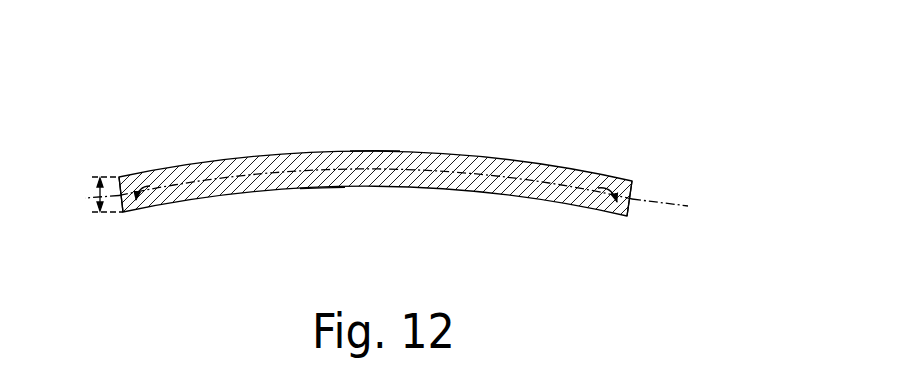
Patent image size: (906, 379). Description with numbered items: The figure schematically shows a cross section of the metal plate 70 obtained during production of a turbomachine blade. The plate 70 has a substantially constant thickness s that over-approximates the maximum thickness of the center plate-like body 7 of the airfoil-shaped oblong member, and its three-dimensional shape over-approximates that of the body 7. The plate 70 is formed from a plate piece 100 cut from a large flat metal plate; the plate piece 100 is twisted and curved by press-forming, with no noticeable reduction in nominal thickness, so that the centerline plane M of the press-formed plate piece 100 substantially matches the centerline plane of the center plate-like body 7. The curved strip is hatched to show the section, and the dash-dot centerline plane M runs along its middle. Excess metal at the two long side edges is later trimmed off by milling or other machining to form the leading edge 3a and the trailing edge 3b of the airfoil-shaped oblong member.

The center plate-like body 7 is at (428, 190).
The metal plate 70 is at (375, 152).
The plate piece 100 is at (322, 183).
The leading edge 3a is at (121, 213).
The trailing edge 3b is at (634, 207).
The centerline plane M is at (400, 195).
The thickness s is at (101, 205).